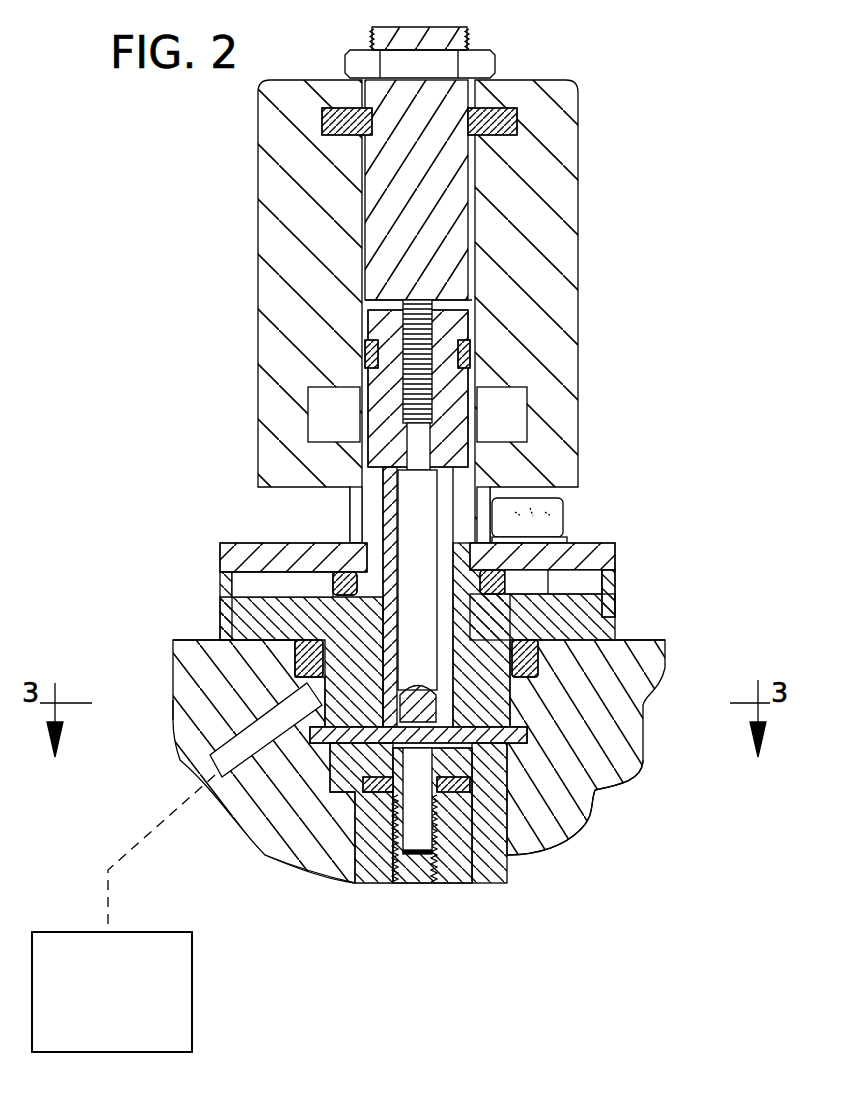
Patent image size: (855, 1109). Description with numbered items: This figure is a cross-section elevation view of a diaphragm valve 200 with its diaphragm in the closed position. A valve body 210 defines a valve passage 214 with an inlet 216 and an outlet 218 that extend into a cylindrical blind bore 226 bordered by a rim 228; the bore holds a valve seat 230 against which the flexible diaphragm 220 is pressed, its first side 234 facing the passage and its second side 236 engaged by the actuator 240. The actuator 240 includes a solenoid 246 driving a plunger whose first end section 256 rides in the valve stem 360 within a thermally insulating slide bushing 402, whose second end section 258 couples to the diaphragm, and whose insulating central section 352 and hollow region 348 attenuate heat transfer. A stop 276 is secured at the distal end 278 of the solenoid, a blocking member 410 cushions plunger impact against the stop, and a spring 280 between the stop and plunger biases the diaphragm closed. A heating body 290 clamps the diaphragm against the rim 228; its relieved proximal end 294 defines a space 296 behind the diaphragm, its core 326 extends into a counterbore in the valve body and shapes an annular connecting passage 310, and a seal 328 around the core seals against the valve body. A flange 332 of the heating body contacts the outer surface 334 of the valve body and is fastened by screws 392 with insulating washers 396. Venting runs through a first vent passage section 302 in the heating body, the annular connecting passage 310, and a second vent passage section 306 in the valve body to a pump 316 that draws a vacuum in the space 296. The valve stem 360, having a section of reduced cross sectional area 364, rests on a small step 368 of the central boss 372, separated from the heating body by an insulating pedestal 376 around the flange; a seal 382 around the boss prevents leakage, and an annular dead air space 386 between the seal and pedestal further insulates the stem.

The diaphragm valve 200 is at (717, 281).
The actuator 240 is at (626, 81).
The solenoid 246 is at (572, 218).
The stop 276 is at (430, 113).
The distal end 278 is at (322, 82).
The blocking member 410 is at (365, 301).
The first end section 256 is at (390, 333).
The slide bushing 402 is at (470, 345).
The spring 280 is at (437, 377).
The central section 352 is at (393, 520).
The screws 392 is at (563, 500).
The insulating washers 396 is at (567, 532).
The section of reduced cross sectional area 364 is at (518, 497).
The step 368 is at (350, 552).
The valve stem 360 is at (232, 545).
The annular dead air space 386 is at (232, 556).
The hollow region 348 is at (240, 588).
The seal 382 is at (286, 576).
The insulating pedestal 376 is at (333, 585).
The central boss 372 is at (570, 540).
The heating body 290 is at (614, 617).
The flange 332 is at (590, 628).
The second end section 258 is at (360, 625).
The first vent passage section 302 is at (507, 703).
The outer surface 334 is at (173, 645).
The annular connecting passage 310 is at (298, 655).
The seal 328 is at (538, 665).
The valve body 210 is at (200, 690).
The core 326 is at (205, 722).
The second vent passage section 306 is at (212, 752).
The proximal end 294 is at (165, 853).
The pump 316 is at (192, 993).
The second side 236 is at (283, 846).
The first side 234 is at (350, 787).
The diaphragm 220 is at (525, 738).
The rim 228 is at (472, 785).
The blind bore 226 is at (372, 797).
The inlet 216 is at (417, 848).
The valve seat 230 is at (488, 862).
The outlet 218 is at (500, 870).
The valve passage 214 is at (585, 828).
The space 296 is at (588, 812).